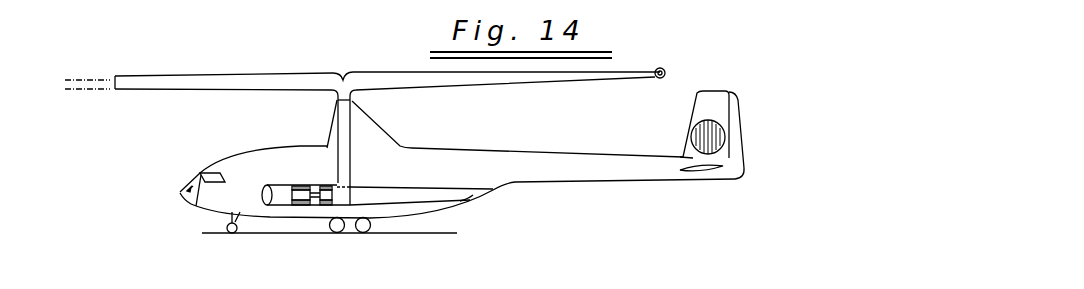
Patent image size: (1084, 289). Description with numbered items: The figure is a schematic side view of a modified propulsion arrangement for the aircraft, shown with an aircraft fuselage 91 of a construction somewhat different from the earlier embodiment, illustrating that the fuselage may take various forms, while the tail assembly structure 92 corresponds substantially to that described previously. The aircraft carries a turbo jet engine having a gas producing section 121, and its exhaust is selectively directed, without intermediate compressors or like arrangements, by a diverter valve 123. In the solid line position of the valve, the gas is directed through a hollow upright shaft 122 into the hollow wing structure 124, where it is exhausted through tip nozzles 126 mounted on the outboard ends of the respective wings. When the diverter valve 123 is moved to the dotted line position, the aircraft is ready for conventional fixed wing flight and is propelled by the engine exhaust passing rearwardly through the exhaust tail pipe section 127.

The hollow wing structure 124 is at (307, 84).
The tip nozzles 126 is at (667, 72).
The hollow upright shaft 122 is at (345, 168).
The aircraft fuselage 91 is at (461, 160).
The gas producing section 121 is at (300, 206).
The diverter valve 123 is at (343, 206).
The exhaust tail pipe section 127 is at (470, 194).
The tail assembly structure 92 is at (707, 180).